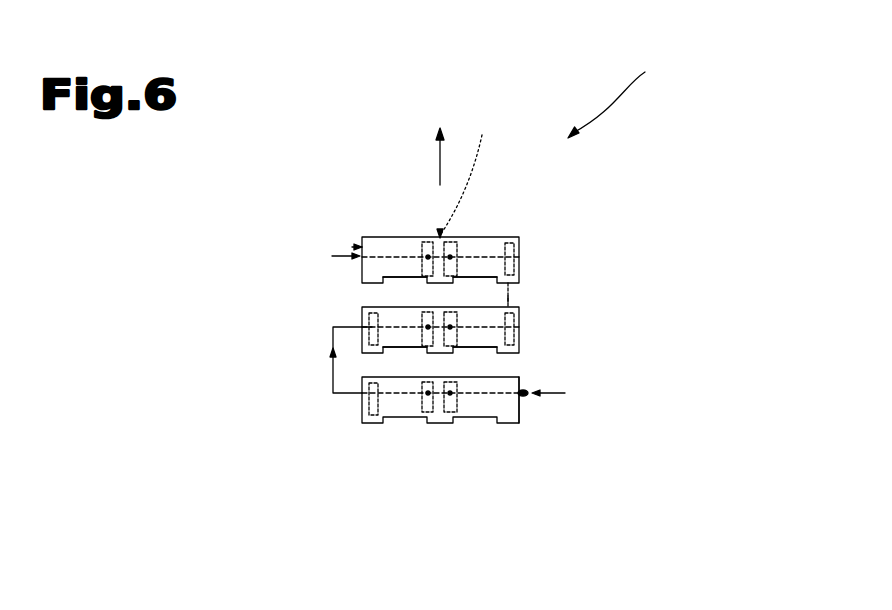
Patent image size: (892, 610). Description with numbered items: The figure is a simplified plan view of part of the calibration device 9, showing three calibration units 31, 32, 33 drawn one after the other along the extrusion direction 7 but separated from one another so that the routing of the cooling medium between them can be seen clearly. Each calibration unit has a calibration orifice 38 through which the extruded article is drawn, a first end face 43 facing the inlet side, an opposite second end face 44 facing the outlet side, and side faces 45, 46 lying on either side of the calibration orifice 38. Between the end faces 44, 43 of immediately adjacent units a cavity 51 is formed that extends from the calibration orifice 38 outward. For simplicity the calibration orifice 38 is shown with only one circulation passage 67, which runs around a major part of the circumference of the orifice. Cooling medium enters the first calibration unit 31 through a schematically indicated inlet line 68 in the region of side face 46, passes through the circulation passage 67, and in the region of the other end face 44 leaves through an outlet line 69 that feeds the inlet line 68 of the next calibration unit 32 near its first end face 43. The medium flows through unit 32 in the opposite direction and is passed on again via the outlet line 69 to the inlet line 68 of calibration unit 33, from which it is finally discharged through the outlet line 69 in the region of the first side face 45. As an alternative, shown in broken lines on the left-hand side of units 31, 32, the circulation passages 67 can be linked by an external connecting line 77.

The extrusion direction 7 is at (437, 168).
The calibration device 9 is at (616, 89).
The first calibration unit 31 is at (512, 424).
The calibration unit 32 is at (487, 345).
The calibration unit 33 is at (505, 240).
The calibration orifice 38 is at (468, 166).
The first end face 43 is at (373, 287).
The second end face 44 is at (519, 378).
The first side face 45 is at (361, 307).
The side face 46 is at (530, 393).
The cavity 51 is at (409, 358).
The circulation passage 67 is at (422, 252).
The inlet line 68 is at (508, 294).
The outlet line 69 is at (333, 255).
The connecting line 77 is at (333, 340).